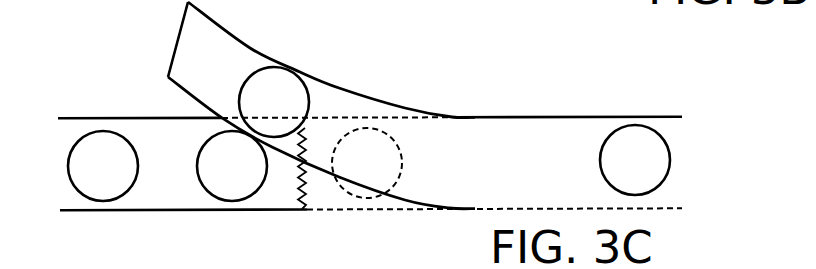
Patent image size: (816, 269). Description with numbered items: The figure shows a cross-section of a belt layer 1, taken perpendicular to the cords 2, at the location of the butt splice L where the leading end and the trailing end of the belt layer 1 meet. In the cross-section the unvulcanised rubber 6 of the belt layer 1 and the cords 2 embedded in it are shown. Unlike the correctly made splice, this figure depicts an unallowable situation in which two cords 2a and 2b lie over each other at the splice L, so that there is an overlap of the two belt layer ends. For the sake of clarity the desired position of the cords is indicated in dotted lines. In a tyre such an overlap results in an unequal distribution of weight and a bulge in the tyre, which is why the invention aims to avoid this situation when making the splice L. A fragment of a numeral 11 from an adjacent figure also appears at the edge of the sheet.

The belt layer 1 is at (420, 68).
The cords 2 is at (629, 152).
The cord 2a is at (210, 155).
The cord 2b is at (277, 75).
The unvulcanised rubber 6 is at (557, 150).
The butt splice L is at (310, 188).
The element 11 (adjacent figure fragment) 11 is at (716, 268).